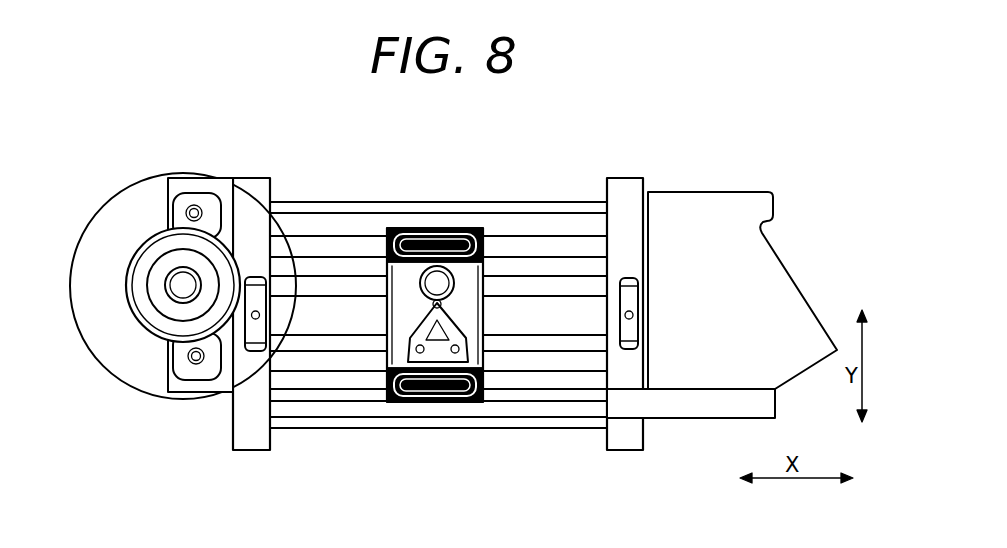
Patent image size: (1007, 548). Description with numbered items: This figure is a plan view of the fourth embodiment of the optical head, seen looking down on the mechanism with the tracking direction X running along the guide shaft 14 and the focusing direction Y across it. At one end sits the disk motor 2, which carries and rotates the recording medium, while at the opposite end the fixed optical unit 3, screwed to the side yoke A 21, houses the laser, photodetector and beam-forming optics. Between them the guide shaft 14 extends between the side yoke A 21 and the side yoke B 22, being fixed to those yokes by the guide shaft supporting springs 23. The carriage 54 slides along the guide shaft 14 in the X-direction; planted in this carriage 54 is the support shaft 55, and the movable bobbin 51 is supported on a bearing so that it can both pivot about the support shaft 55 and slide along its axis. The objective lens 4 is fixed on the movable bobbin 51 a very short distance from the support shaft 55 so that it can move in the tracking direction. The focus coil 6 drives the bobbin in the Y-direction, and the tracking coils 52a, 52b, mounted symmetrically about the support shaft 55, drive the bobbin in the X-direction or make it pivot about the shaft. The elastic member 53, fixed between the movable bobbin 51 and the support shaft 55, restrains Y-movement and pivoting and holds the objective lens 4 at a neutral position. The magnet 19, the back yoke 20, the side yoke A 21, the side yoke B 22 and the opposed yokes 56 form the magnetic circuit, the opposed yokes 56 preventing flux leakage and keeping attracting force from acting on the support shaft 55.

The disk motor 2 is at (142, 190).
The fixed optical unit 3 is at (712, 197).
The objective lens 4 is at (437, 283).
The focus coil 6 is at (478, 230).
The guide shaft 14 is at (557, 247).
The magnet 19 is at (433, 206).
The back yoke 20 is at (392, 225).
The side yoke A 21 is at (625, 187).
The side yoke B 22 is at (240, 408).
The guide shaft supporting spring 23 is at (255, 345).
The movable bobbin 51 is at (480, 333).
The tracking coil 52a is at (395, 385).
The tracking coil 52b is at (487, 238).
The elastic member 53 is at (440, 356).
The carriage 54 is at (383, 330).
The support shaft 55 is at (470, 228).
The opposed yokes 56 is at (320, 285).